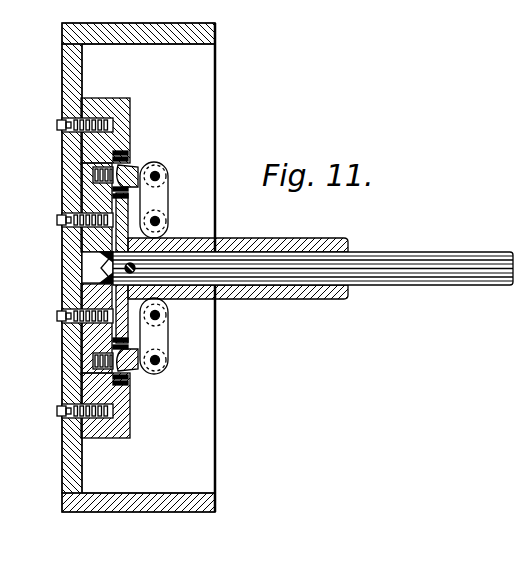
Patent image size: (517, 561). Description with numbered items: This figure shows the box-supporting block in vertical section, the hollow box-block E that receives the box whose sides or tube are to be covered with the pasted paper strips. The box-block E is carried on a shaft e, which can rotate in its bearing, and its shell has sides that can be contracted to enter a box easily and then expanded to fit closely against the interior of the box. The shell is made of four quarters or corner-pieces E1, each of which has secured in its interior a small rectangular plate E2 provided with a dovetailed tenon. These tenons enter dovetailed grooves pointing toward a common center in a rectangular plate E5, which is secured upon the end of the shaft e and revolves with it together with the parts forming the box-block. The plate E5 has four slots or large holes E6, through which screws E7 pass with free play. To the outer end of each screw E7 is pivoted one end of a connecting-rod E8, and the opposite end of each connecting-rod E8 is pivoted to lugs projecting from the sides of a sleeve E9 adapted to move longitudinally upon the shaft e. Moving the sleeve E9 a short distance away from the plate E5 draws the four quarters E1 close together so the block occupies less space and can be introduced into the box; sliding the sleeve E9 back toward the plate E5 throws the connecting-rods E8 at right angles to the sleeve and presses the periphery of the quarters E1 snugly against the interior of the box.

The hollow box-block E is at (213, 353).
The quarter or corner-piece E1 is at (181, 68).
The small rectangular plate E2 is at (97, 98).
The rectangular plate E5 is at (128, 120).
The slot or large hole E6 is at (136, 143).
The screw E7 is at (130, 166).
The connecting-rod E8 is at (168, 200).
The sleeve E9 is at (238, 258).
The shaft e is at (297, 257).